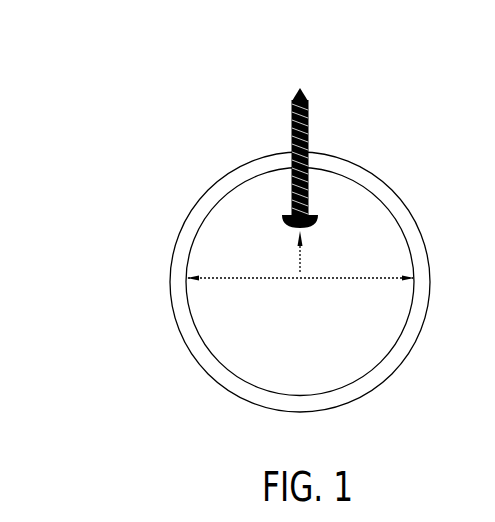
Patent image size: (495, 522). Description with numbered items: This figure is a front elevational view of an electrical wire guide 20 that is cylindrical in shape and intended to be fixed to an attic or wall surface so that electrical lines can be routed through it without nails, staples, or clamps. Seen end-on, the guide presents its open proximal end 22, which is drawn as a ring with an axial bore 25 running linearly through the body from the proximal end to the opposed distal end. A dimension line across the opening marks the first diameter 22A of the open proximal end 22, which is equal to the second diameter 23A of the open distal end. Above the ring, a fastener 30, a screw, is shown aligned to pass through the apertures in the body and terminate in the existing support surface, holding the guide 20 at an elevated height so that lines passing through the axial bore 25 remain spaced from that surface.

The electrical wire guide 20 is at (150, 157).
The open proximal end 22 is at (225, 315).
The first diameter 22A is at (238, 278).
The second diameter 23A is at (356, 278).
The axial bore 25 is at (279, 365).
The fastener 30 is at (290, 130).